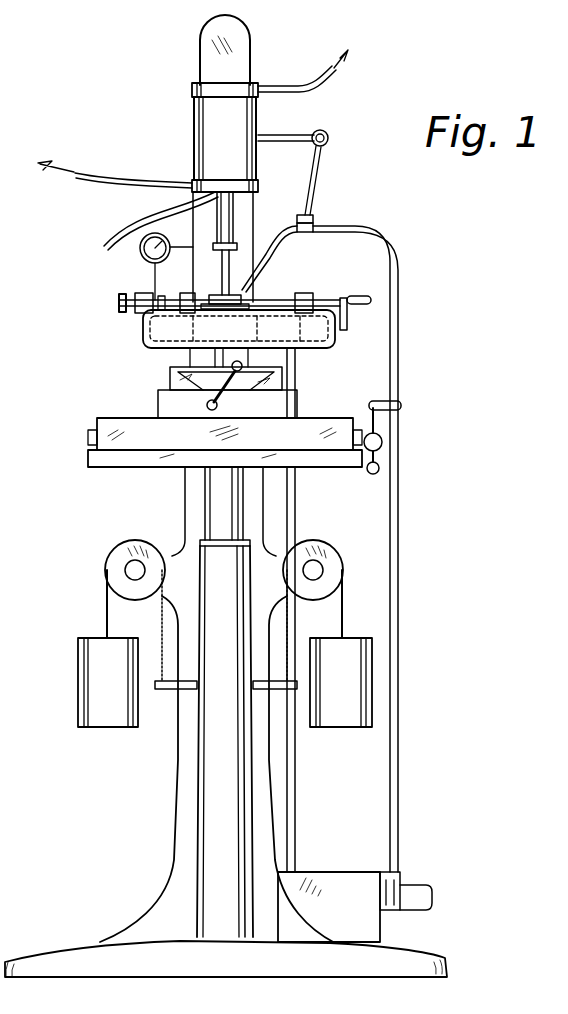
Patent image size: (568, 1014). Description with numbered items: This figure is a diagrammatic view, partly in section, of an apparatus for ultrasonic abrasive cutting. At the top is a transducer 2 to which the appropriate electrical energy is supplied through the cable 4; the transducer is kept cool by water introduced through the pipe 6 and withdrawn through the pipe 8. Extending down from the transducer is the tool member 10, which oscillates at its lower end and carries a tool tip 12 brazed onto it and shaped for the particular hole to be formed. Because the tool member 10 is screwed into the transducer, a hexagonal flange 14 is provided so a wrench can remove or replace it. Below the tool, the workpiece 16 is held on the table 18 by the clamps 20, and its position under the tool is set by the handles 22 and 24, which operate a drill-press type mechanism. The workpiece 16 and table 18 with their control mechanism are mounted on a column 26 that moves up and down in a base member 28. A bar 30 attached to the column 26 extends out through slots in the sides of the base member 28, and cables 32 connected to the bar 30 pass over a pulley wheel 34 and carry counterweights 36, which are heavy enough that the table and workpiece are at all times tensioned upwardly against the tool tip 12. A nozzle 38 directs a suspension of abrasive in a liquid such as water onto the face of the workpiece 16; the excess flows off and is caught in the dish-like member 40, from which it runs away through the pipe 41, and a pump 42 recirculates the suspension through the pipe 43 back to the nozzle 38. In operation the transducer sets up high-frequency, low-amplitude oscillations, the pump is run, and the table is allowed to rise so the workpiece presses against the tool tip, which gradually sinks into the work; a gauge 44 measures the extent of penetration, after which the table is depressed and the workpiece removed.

The transducer 2 is at (192, 123).
The cable 4 is at (124, 236).
The pipe 6 is at (307, 84).
The pipe 8 is at (106, 175).
The tool member 10 is at (234, 217).
The tool tip 12 is at (221, 294).
The hexagonal flange 14 is at (213, 247).
The workpiece 16 is at (244, 302).
The table 18 is at (190, 326).
The clamps 20 is at (126, 311).
The handle 22 is at (227, 389).
The handle 24 is at (369, 422).
The column 26 is at (205, 499).
The base member 28 is at (197, 761).
The bar 30 is at (170, 690).
The cables 32 is at (106, 612).
The pulley wheel 34 is at (112, 561).
The counterweights 36 is at (78, 706).
The nozzle 38 is at (258, 279).
The dish-like member 40 is at (148, 341).
The pipe 41 is at (296, 384).
The pump 42 is at (396, 880).
The pipe 43 is at (399, 660).
The gauge 44 is at (153, 262).